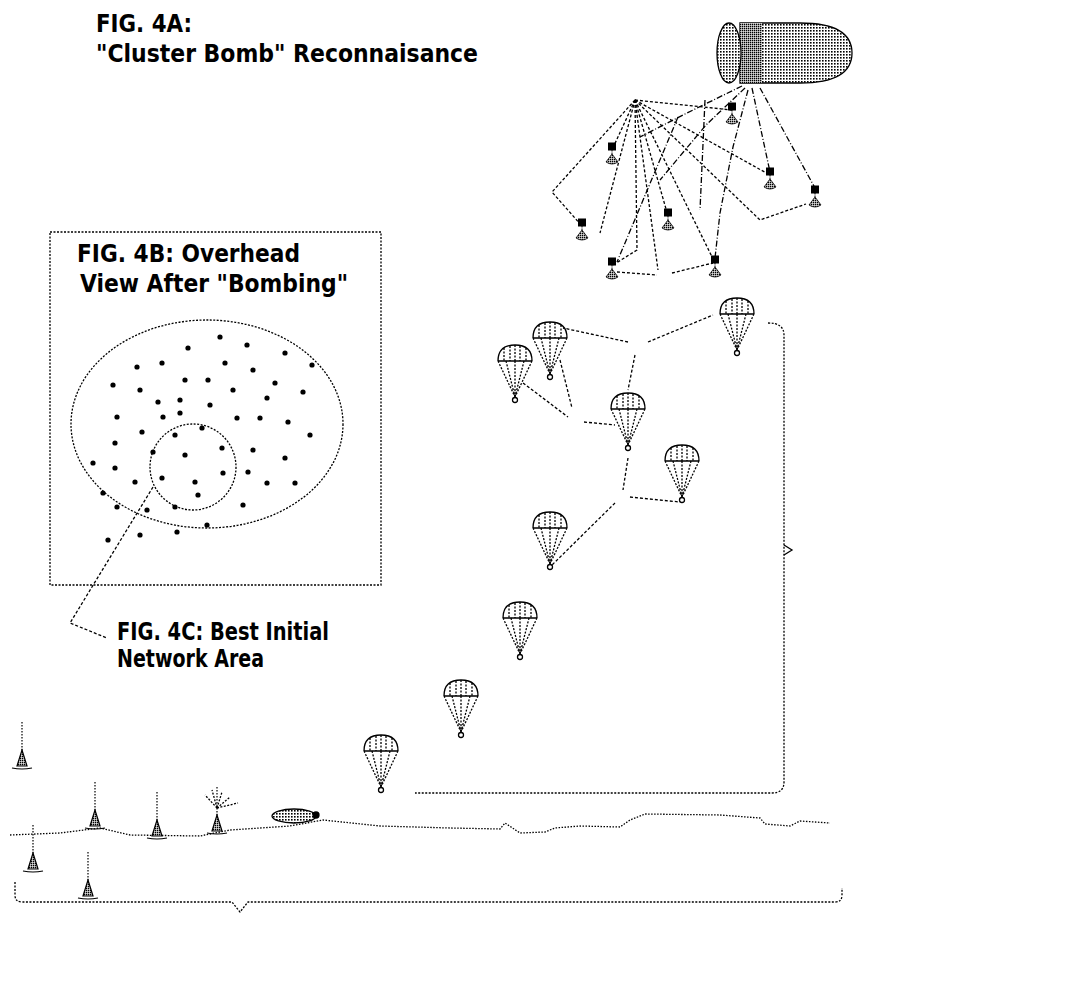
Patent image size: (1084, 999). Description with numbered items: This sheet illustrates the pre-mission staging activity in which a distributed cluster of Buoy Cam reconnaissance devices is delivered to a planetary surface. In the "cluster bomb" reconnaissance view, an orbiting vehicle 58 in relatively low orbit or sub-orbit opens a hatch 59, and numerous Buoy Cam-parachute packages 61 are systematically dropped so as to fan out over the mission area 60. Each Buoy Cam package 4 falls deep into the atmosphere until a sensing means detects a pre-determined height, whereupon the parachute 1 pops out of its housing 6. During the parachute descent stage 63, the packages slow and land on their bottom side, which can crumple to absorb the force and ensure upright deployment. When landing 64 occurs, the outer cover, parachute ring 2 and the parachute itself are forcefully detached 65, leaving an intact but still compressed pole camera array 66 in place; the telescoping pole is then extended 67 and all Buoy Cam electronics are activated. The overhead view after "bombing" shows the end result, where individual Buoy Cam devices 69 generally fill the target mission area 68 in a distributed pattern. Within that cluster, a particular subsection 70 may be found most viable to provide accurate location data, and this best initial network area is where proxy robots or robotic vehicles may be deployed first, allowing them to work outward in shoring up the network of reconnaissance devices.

In FIG. 4A, the orbiting vehicle 58 is at (806, 83).
In FIG. 4A, the hatch 59 is at (718, 45).
In FIG. 4A, the Buoy Cam-parachute packages 61 is at (683, 176).
In FIG. 4A, the housing 6 is at (822, 192).
In FIG. 4A, the Buoy Cam package 4 is at (654, 336).
In FIG. 4A, the parachute 1 is at (643, 344).
In FIG. 4A, the parachute ring 2 is at (556, 386).
In FIG. 4A, the parachute descent stage 63 is at (792, 550).
In FIG. 4A, the mission area 60 is at (243, 907).
In FIG. 4A, the telescoping pole extension 67 is at (85, 850).
In FIG. 4A, the compressed pole camera array 66 is at (160, 820).
In FIG. 4A, the detachment of outer cover and parachute 65 is at (218, 797).
In FIG. 4A, the landing 64 is at (318, 812).
In FIG. 4B, the target mission area 68 is at (275, 334).
In FIG. 4B, the individual Buoy Cam devices 69 is at (295, 483).
In FIG. 4B, the subsection 70 is at (218, 430).